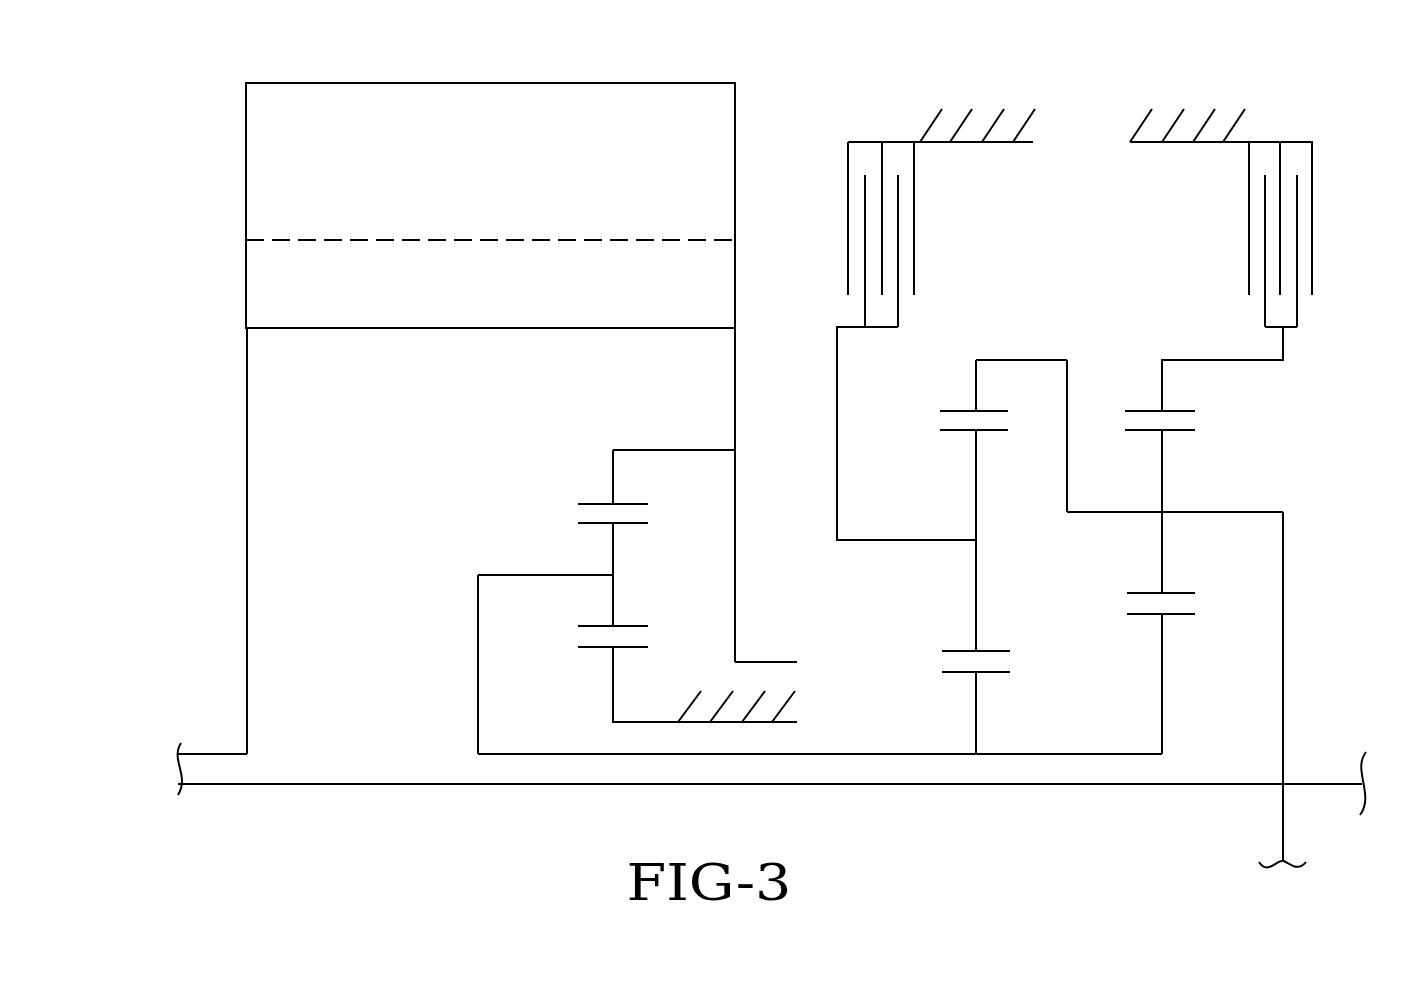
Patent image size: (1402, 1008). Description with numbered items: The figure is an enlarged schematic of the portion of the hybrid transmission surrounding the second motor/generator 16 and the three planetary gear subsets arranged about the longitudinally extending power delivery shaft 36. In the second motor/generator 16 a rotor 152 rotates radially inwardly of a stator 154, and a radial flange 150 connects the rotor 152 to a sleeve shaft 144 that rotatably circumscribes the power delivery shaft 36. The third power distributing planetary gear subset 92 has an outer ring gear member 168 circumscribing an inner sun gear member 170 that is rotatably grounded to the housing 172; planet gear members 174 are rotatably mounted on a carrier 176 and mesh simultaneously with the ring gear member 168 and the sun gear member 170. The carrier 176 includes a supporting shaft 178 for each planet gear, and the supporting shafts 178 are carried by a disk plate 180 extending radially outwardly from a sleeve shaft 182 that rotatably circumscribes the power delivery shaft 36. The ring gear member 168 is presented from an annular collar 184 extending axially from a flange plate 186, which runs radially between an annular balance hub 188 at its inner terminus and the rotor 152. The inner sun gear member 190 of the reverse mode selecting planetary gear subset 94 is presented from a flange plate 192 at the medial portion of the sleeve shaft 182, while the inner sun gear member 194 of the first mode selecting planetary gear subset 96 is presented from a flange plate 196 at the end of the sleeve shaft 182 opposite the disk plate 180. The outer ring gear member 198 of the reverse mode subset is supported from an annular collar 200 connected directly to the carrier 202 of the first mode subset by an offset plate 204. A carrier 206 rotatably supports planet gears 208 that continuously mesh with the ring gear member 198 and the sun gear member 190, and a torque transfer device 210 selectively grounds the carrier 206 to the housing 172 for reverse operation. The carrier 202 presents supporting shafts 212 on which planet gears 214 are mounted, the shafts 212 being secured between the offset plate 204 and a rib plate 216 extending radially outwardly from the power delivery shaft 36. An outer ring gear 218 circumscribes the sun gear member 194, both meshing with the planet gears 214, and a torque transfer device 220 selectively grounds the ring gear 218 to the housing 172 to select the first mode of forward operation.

The second motor/generator 16 is at (243, 137).
The rotor 152 is at (465, 302).
The stator 154 is at (465, 177).
The radial flange 150 is at (247, 493).
The sleeve shaft 144 is at (213, 754).
The power delivery shaft 36 is at (1118, 786).
The third power distributing planetary gear subset 92 is at (628, 446).
The reverse mode selecting planetary gear subset 94 is at (989, 355).
The first mode selecting planetary gear subset 96 is at (1169, 355).
The outer ring gear member 168 is at (595, 504).
The inner sun gear member 170 is at (600, 648).
The housing 172 is at (713, 697).
The planet gear members 174 is at (613, 588).
The carrier 176 is at (474, 600).
The supporting shaft 178 is at (522, 578).
The disk plate 180 is at (478, 710).
The sleeve shaft 182 is at (853, 754).
The annular collar 184 is at (688, 450).
The flange plate 186 is at (737, 508).
The annular balance hub 188 is at (768, 662).
The inner sun gear member 190 is at (995, 672).
The flange plate 192 is at (976, 725).
The inner sun gear member 194 is at (1175, 614).
The flange plate 196 is at (1163, 720).
The outer ring gear member 198 is at (958, 411).
The annular collar 200 is at (1040, 360).
The carrier 202 is at (1108, 518).
The offset plate 204 is at (1068, 397).
The carrier 206 is at (864, 548).
The planet gears 208 is at (976, 468).
The torque transfer device 210 is at (843, 242).
The supporting shafts 212 is at (1253, 511).
The planet gears 214 is at (1163, 468).
The rib plate 216 is at (1285, 607).
The outer ring gear 218 is at (1173, 411).
The torque transfer device 220 is at (1319, 242).